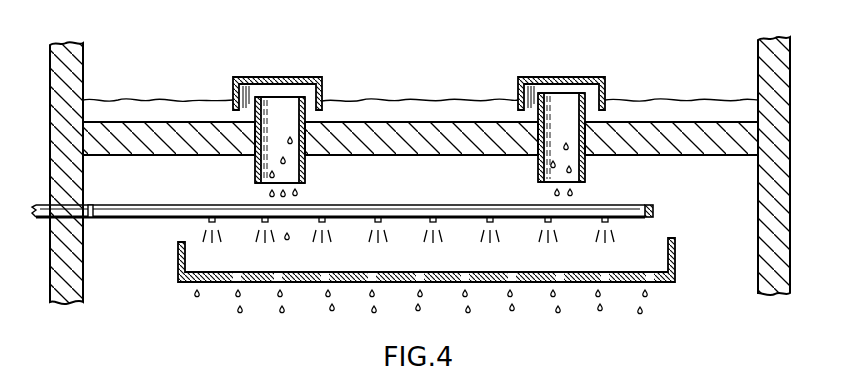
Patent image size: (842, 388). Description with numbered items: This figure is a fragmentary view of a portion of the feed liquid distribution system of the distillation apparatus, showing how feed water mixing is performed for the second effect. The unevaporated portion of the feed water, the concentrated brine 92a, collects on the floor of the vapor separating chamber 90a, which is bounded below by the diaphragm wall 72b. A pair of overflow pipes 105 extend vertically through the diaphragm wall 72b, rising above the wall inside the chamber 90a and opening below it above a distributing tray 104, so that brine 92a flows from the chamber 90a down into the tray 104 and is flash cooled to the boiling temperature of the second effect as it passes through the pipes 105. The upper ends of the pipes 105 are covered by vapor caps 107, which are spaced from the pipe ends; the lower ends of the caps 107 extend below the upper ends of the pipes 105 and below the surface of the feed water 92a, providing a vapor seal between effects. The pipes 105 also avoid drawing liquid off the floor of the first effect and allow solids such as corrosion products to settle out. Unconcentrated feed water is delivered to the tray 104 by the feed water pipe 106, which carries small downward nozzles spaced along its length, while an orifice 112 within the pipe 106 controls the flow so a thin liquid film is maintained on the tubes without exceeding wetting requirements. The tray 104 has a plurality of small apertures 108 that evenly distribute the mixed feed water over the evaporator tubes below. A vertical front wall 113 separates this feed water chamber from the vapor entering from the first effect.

The diaphragm wall 72b is at (638, 156).
The vapor separating chamber 90a is at (478, 73).
The concentrated brine 92a is at (375, 100).
The distributing tray 104 is at (177, 282).
The overflow pipes 105 is at (305, 178).
The feed water pipe 106 is at (186, 205).
The vapor caps 107 is at (284, 77).
The small apertures 108 is at (278, 283).
The orifice 112 is at (93, 206).
The vertical front wall 113 is at (83, 62).